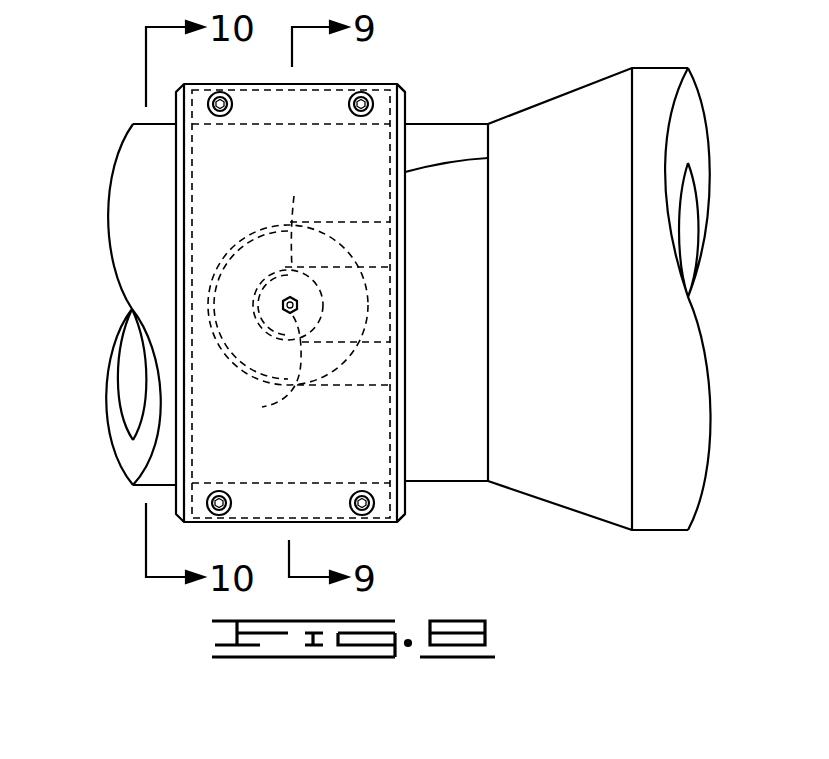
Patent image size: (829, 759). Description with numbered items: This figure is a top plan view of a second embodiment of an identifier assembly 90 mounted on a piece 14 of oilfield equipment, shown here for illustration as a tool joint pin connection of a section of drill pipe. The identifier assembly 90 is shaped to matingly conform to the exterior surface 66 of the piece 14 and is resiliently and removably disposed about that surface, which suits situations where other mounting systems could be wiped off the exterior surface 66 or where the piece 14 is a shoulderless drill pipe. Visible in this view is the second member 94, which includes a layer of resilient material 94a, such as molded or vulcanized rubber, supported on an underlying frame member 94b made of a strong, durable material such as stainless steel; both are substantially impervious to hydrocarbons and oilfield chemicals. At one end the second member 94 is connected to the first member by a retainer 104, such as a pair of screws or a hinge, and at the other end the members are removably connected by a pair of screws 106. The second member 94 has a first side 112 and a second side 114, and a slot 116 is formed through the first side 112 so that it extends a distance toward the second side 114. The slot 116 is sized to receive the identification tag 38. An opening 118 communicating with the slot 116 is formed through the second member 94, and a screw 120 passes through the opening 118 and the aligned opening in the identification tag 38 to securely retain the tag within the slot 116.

The piece of oilfield equipment 14 is at (572, 86).
The identification tag 38 is at (294, 196).
The exterior surface 66 is at (436, 122).
The identifier assembly 90 is at (166, 393).
The second member 94 is at (210, 178).
The layer of resilient material 94a is at (405, 493).
The frame member 94b is at (410, 107).
The retainer 104 is at (220, 92).
The screws 106 is at (219, 516).
The first side 112 is at (488, 158).
The second side 114 is at (178, 208).
The slot 116 is at (378, 343).
The opening 118 is at (256, 368).
The screw 120 is at (285, 302).